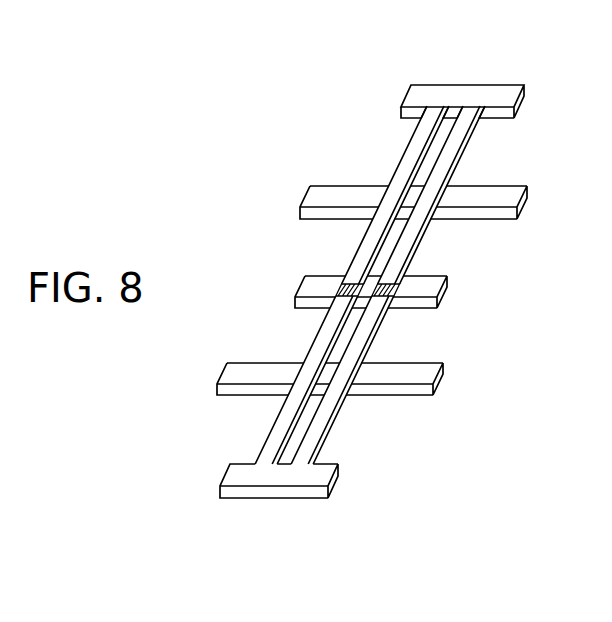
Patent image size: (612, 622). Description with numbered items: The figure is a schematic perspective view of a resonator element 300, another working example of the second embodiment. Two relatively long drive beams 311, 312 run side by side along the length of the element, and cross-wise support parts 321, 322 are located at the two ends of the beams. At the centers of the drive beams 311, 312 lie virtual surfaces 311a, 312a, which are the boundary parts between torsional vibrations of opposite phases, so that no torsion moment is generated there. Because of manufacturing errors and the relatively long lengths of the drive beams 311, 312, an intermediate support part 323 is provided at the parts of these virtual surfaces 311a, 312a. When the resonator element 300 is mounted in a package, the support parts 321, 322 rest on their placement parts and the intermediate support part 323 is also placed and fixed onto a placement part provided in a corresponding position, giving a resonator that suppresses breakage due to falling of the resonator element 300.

The resonator element 300 is at (326, 74).
The support part 321 is at (470, 96).
The support part 322 is at (277, 478).
The intermediate support part 323 is at (430, 285).
The drive beam 311 is at (414, 231).
The drive beam 312 is at (378, 230).
The virtual surface 311a is at (395, 284).
The virtual surface 312a is at (363, 293).